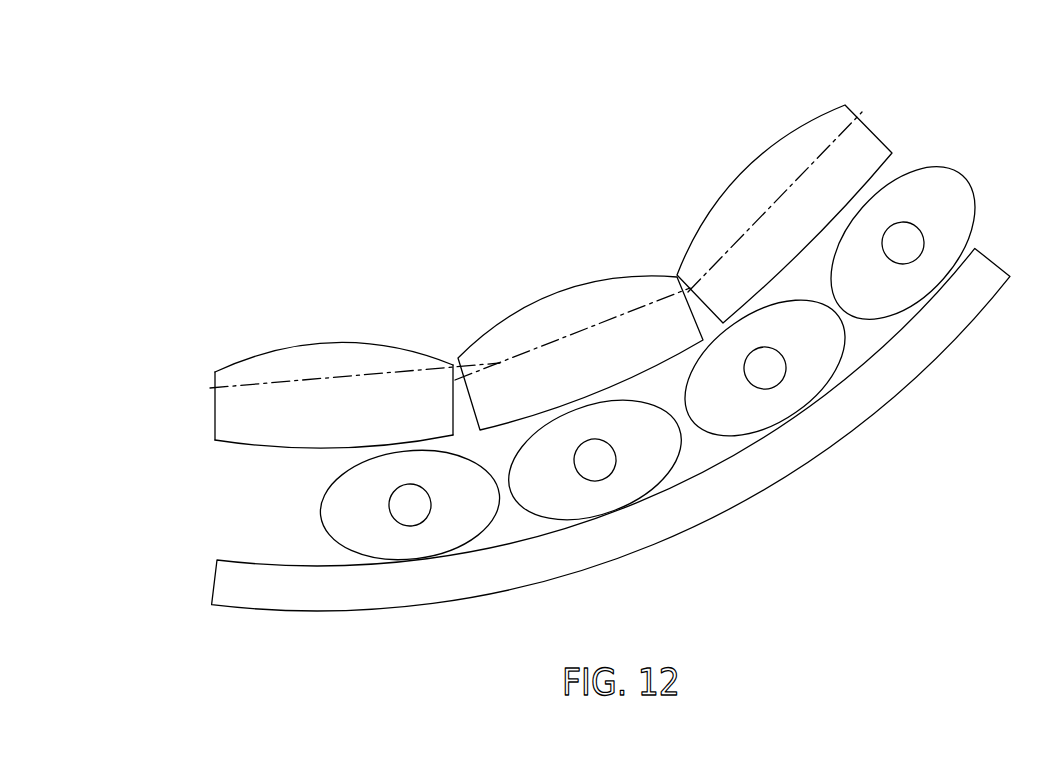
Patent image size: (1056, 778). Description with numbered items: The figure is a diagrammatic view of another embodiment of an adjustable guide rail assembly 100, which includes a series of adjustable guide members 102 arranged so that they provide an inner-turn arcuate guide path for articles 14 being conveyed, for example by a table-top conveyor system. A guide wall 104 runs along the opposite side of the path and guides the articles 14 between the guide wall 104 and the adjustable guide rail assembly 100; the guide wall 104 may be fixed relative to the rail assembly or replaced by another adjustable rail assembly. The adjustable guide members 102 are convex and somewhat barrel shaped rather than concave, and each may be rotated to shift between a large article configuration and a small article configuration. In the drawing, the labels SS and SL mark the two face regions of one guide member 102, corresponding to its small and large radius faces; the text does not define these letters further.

The adjustable guide rail assembly 100 is at (617, 338).
The adjustable guide member 102 is at (551, 281).
The article 14 is at (412, 545).
The guide wall 104 is at (930, 367).
The short side surface SS is at (378, 345).
The long side surface SL is at (281, 448).